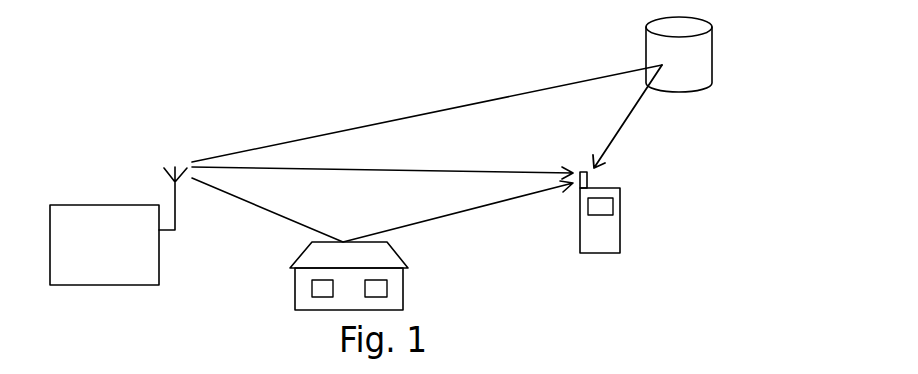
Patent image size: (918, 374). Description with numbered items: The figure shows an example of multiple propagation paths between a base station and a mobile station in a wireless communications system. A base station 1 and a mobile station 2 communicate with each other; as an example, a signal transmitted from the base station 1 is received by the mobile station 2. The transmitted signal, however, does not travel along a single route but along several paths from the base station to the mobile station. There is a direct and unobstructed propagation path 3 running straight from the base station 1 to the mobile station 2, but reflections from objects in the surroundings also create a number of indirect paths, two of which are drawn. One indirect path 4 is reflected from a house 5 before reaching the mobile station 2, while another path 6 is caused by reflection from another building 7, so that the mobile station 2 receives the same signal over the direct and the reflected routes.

The base station 1 is at (110, 204).
The mobile station 2 is at (620, 230).
The direct propagation path 3 is at (443, 167).
The indirect path 4 is at (452, 215).
The house 5 is at (403, 280).
The path 6 is at (500, 97).
The building 7 is at (673, 93).